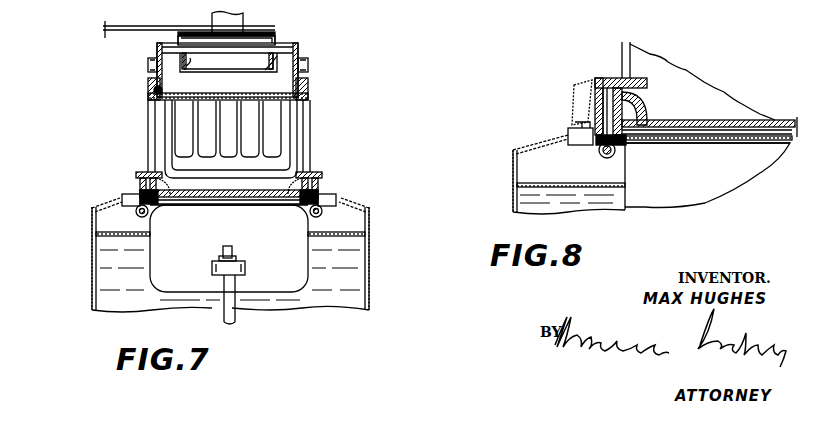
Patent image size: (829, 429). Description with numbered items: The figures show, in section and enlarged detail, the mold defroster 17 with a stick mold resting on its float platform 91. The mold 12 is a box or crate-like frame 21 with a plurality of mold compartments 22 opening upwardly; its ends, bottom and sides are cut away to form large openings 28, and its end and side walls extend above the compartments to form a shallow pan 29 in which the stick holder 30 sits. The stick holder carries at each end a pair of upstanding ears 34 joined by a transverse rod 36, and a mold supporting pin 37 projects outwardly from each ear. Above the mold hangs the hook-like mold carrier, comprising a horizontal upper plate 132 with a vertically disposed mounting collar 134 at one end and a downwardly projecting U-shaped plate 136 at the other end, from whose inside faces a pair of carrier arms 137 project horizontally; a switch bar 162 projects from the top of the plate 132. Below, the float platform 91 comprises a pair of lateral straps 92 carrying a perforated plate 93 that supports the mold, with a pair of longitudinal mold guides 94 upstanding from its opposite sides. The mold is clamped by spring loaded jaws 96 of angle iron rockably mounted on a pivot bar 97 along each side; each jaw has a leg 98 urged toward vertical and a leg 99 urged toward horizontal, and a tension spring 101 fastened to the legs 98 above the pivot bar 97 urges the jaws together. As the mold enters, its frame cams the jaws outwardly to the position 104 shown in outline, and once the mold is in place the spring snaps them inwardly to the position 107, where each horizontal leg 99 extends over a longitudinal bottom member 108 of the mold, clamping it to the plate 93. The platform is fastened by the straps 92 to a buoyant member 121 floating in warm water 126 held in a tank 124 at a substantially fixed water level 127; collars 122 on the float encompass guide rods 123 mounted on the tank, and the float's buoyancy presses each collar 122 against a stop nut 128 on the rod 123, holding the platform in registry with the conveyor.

In FIG. 7, the mold defroster 17 is at (79, 151).
In FIG. 7, the switch bar 162 is at (130, 24).
In FIG. 7, the mounting collar 134 is at (243, 22).
In FIG. 7, the upper plate 132 is at (270, 33).
In FIG. 7, the U-shaped plate 136 is at (278, 42).
In FIG. 7, the transverse rod 36 is at (298, 44).
In FIG. 7, the stick holder 30 is at (305, 48).
In FIG. 7, the upstanding ears 34 is at (158, 49).
In FIG. 7, the mold supporting pin 37 is at (148, 64).
In FIG. 7, the carrier arms 137 is at (186, 74).
In FIG. 7, the shallow pan 29 is at (156, 90).
In FIG. 7, the mold 12 is at (318, 95).
In FIG. 7, the openings 28 is at (311, 120).
In FIG. 7, the frame 21 is at (297, 144).
In FIG. 7, the mold compartments 22 is at (218, 154).
In FIG. 7, the horizontal jaw leg 99 is at (142, 169).
In FIG. 8, the horizontal jaw leg 99 is at (610, 78).
In FIG. 7, the spring loaded jaws 96 is at (132, 186).
In FIG. 8, the spring loaded jaws 96 is at (592, 80).
In FIG. 7, the vertical jaw leg 98 is at (326, 188).
In FIG. 8, the vertical jaw leg 98 is at (595, 97).
In FIG. 7, the float platform 91 is at (348, 166).
In FIG. 7, the plate 93 is at (208, 198).
In FIG. 8, the plate 93 is at (780, 118).
In FIG. 7, the lateral straps 92 is at (229, 203).
In FIG. 8, the lateral straps 92 is at (568, 132).
In FIG. 7, the tension spring 101 is at (296, 204).
In FIG. 8, the tension spring 101 is at (662, 146).
In FIG. 7, the water level 127 is at (362, 224).
In FIG. 8, the water level 127 is at (558, 182).
In FIG. 7, the tank 124 is at (370, 257).
In FIG. 8, the tank 124 is at (513, 170).
In FIG. 7, the warm water 126 is at (354, 286).
In FIG. 8, the warm water 126 is at (520, 205).
In FIG. 7, the buoyant member 121 is at (229, 248).
In FIG. 8, the buoyant member 121 is at (707, 175).
In FIG. 7, the stop nut 128 is at (222, 252).
In FIG. 7, the collars 122 is at (212, 266).
In FIG. 7, the guide rods 123 is at (236, 322).
In FIG. 8, the outward jaw position 104 is at (622, 72).
In FIG. 8, the inward jaw position 107 is at (640, 56).
In FIG. 8, the longitudinal mold guides 94 is at (630, 107).
In FIG. 8, the longitudinal bottom member 108 is at (652, 115).
In FIG. 8, the pivot bar 97 is at (600, 156).